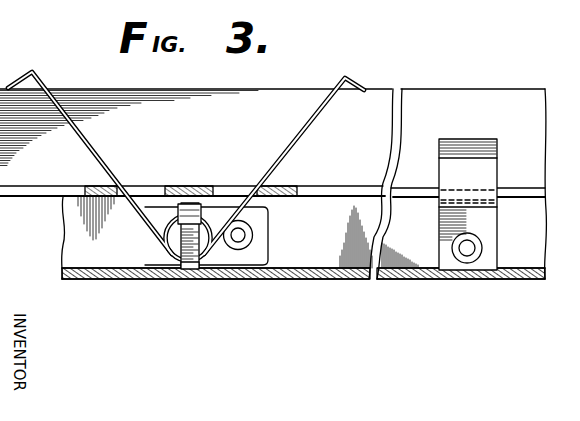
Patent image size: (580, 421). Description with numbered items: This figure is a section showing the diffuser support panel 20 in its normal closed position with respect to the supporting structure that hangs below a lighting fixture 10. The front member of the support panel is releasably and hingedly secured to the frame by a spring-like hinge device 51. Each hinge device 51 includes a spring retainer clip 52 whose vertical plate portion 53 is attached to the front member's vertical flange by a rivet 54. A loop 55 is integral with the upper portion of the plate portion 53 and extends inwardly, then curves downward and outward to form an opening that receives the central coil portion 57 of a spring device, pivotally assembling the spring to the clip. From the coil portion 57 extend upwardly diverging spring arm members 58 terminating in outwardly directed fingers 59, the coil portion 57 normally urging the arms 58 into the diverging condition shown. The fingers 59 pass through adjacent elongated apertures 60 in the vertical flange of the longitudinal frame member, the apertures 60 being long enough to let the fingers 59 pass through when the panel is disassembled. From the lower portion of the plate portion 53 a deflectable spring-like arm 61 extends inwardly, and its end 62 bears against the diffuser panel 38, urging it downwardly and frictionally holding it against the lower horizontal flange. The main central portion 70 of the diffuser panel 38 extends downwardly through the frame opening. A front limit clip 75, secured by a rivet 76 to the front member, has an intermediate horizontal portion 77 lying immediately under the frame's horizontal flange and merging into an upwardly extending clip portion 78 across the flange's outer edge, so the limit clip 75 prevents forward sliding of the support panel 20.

The lighting fixture 10 is at (311, 302).
The diffuser support panel 20 is at (227, 276).
The diffuser panel 38 is at (143, 284).
The spring-like hinge device 51 is at (279, 215).
The spring retainer clip 52 is at (270, 252).
The vertical plate portion 53 is at (253, 258).
The rivet 54 is at (253, 233).
The loop 55 is at (178, 208).
The central coil portion 57 is at (167, 253).
The spring arm members 58 is at (206, 152).
The outwardly directed fingers 59 is at (24, 76).
The elongated apertures 60 is at (148, 192).
The deflectable spring-like arm 61 is at (193, 278).
The end of spring arm 62 is at (174, 270).
The main central portion 70 is at (340, 279).
The front limit clip 75 is at (479, 179).
The rivet 76 is at (483, 247).
The intermediate horizontal portion 77 is at (488, 209).
The upwardly extending clip portion 78 is at (496, 163).